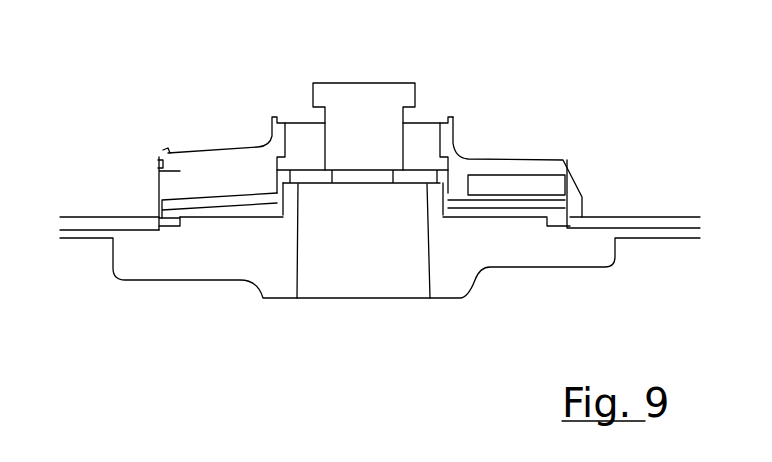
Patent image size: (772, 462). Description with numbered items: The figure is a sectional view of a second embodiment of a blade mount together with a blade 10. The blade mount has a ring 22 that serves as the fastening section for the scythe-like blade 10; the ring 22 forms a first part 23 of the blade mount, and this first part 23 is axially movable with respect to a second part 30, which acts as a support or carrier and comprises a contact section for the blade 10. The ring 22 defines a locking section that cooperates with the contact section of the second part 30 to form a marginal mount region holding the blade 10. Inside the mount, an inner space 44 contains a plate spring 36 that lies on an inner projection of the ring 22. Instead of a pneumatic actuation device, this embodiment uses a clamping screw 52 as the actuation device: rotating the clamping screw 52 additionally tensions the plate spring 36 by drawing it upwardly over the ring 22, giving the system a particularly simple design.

The blade 10 is at (657, 217).
The ring 22 is at (578, 197).
The first part 23 is at (146, 218).
The second part 30 is at (590, 247).
The plate spring 36 is at (224, 200).
The inner space 44 is at (503, 185).
The clamping screw 52 is at (377, 103).